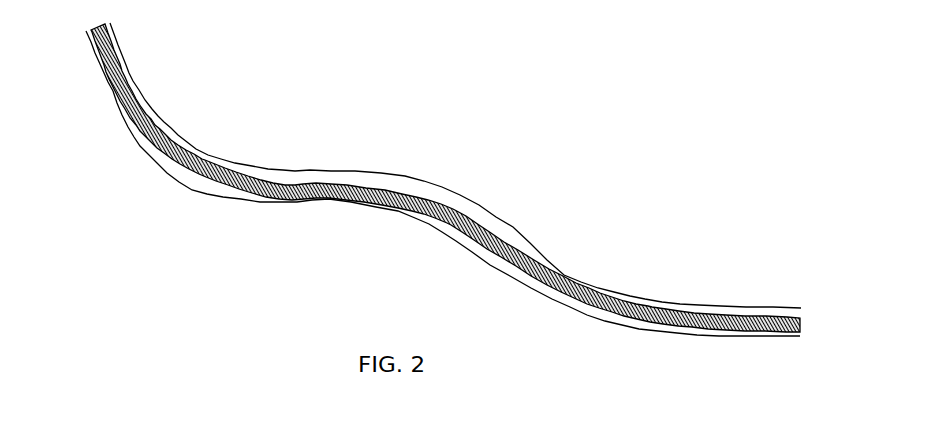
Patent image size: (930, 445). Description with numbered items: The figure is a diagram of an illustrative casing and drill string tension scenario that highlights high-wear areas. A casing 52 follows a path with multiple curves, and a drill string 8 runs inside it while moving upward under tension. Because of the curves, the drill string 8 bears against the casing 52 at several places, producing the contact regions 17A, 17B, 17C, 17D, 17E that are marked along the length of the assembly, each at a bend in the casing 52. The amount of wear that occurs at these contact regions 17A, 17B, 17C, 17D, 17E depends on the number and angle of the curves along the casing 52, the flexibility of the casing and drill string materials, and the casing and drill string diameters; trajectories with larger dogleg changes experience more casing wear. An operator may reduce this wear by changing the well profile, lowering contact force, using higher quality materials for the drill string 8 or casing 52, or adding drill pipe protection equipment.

The drill string 8 is at (135, 128).
The casing 52 is at (200, 185).
The contact region 17A is at (102, 86).
The contact region 17B is at (250, 162).
The contact region 17C is at (358, 203).
The contact region 17D is at (563, 260).
The contact region 17E is at (778, 337).